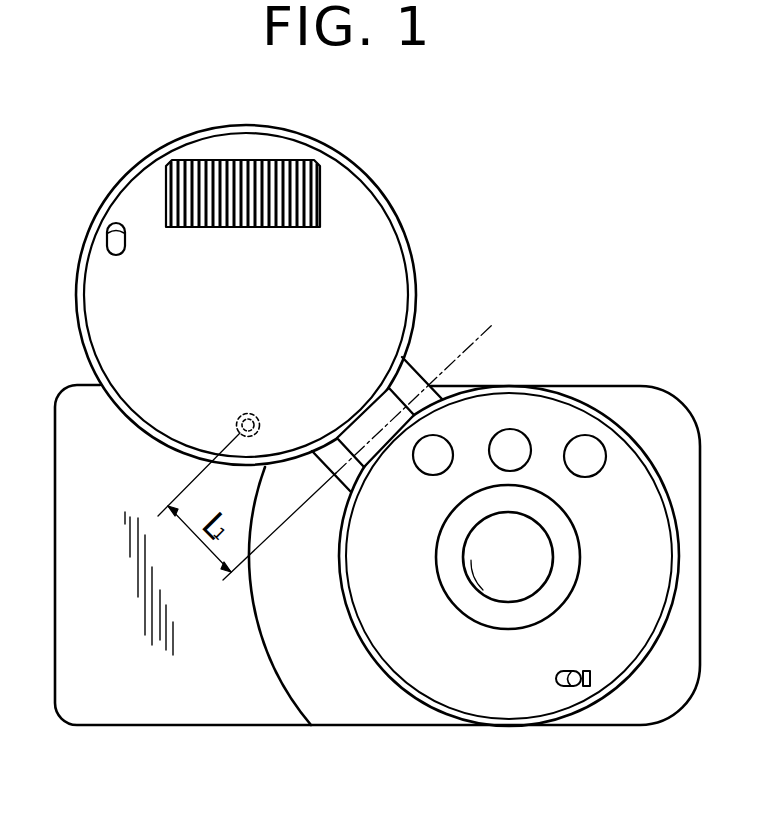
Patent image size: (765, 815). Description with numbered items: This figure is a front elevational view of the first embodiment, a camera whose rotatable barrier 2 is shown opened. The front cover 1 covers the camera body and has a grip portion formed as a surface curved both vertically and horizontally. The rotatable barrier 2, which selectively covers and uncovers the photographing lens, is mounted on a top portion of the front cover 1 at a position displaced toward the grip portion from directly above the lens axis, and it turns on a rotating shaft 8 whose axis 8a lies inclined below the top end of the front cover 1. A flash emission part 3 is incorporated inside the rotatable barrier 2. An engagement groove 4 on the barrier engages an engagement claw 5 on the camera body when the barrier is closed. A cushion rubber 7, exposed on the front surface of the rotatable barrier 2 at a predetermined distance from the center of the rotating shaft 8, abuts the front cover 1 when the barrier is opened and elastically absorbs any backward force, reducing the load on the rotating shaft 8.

The front cover 1 is at (135, 707).
The rotatable barrier 2 is at (375, 252).
The flash emission part 3 is at (312, 193).
The engagement groove 4 is at (105, 234).
The engagement claw 5 is at (577, 683).
The cushion rubber 7 is at (240, 418).
The rotating shaft 8 is at (403, 375).
The axis 8a is at (427, 377).